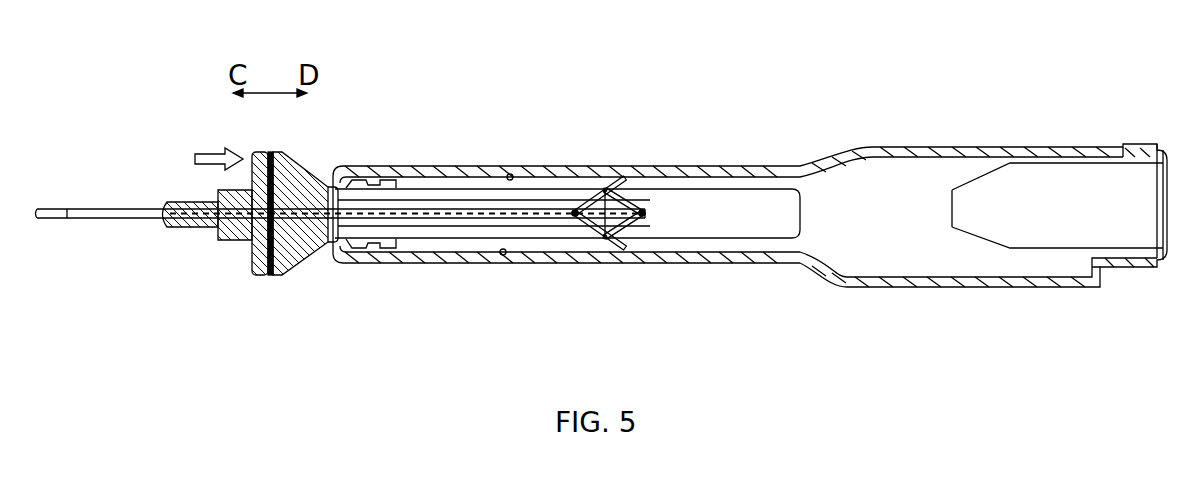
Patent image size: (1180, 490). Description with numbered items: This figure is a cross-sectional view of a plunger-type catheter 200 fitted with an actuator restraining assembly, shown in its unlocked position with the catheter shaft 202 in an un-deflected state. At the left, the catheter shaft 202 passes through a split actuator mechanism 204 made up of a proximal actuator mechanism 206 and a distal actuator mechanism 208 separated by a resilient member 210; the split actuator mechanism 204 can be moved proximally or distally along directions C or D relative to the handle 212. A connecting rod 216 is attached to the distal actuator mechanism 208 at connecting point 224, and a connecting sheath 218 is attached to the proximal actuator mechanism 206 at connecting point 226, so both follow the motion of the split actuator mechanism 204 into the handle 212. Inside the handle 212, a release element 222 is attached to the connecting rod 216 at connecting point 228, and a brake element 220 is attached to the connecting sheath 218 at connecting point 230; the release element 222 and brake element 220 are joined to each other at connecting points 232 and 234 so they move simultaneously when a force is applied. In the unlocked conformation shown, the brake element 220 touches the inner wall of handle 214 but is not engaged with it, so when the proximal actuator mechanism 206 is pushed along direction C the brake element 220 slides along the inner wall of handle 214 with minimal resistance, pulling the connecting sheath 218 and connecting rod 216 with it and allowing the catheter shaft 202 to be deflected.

The plunger-type catheter 200 is at (738, 92).
The catheter shaft 202 is at (126, 208).
The split actuator mechanism 204 is at (268, 283).
The proximal actuator mechanism 206 is at (282, 152).
The distal actuator mechanism 208 is at (253, 155).
The resilient member 210 is at (268, 156).
The handle 212 is at (540, 166).
The inner wall of handle 214 is at (510, 175).
The connecting rod 216 is at (482, 208).
The connecting sheath 218 is at (372, 207).
The brake element 220 is at (590, 198).
The release element 222 is at (623, 197).
The connecting point 224 is at (234, 243).
The connecting point 226 is at (330, 243).
The connecting point 228 is at (647, 217).
The connecting point 230 is at (567, 217).
The connecting point 232 is at (610, 188).
The connecting point 234 is at (600, 240).